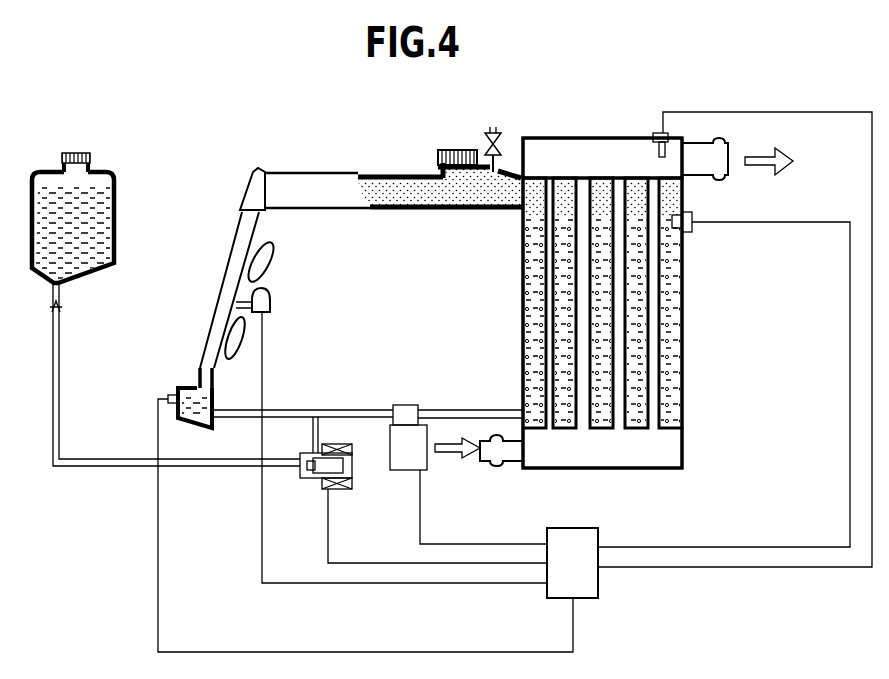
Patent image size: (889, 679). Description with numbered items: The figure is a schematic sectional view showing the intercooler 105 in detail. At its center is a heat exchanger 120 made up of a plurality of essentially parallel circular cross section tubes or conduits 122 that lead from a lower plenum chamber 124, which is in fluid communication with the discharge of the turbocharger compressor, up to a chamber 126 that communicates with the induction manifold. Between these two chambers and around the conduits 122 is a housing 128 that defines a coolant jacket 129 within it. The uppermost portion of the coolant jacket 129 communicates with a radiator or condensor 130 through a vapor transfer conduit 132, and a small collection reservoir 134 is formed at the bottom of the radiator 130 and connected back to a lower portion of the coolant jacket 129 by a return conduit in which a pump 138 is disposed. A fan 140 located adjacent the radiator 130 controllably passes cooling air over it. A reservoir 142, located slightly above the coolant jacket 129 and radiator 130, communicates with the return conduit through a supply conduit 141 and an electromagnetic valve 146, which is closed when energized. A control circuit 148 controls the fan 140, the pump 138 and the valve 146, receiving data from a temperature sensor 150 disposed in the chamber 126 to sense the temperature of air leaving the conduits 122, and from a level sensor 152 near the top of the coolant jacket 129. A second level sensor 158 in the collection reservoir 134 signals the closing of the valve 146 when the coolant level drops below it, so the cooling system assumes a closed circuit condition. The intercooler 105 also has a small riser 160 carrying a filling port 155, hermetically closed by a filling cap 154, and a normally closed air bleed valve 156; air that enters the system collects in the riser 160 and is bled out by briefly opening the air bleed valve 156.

The intercooler 105 is at (306, 99).
The heat exchanger 120 is at (514, 251).
The tubes or conduits 122 is at (605, 315).
The lower plenum chamber 124 is at (670, 453).
The chamber 126 is at (622, 145).
The housing 128 is at (523, 280).
The coolant jacket 129 is at (523, 320).
The radiator or condensor 130 is at (217, 327).
The vapor transfer conduit 132 is at (304, 180).
The collection reservoir 134 is at (193, 425).
The pump 138 is at (407, 410).
The fan 140 is at (270, 302).
The supply conduit 141 is at (88, 463).
The reservoir 142 is at (108, 170).
The electromagnetic valve 146 is at (305, 478).
The control circuit 148 is at (600, 532).
The temperature sensor 150 is at (665, 135).
The level sensor 152 is at (692, 226).
The filling cap 154 is at (457, 150).
The filling port 155 is at (437, 156).
The air bleed valve 156 is at (503, 140).
The second level sensor 158 is at (170, 395).
The riser 160 is at (437, 169).